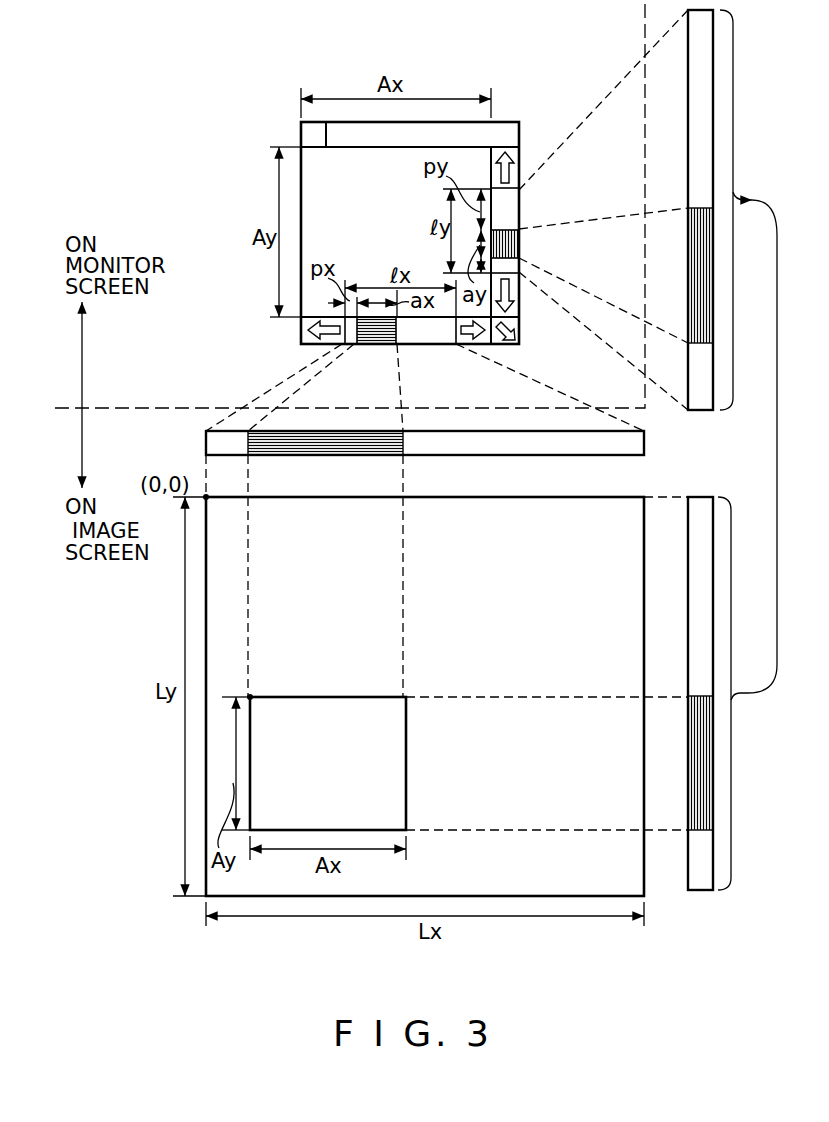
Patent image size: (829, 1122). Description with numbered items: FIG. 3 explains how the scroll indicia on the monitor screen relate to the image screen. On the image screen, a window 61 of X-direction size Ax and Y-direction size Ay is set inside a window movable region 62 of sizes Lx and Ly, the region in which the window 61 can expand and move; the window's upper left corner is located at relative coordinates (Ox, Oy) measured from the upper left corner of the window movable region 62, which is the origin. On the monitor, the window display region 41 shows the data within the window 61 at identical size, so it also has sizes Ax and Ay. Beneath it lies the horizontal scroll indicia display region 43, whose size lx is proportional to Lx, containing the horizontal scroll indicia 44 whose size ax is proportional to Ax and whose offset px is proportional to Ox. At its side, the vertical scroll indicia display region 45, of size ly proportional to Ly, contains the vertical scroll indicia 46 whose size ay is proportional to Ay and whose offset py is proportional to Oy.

The window display region 41 is at (484, 162).
The horizontal scroll indicia display region 43 is at (428, 346).
The horizontal scroll indicia 44 is at (372, 346).
The vertical scroll indicia display region 45 is at (522, 215).
The vertical scroll indicia 46 is at (521, 247).
The window 61 is at (408, 742).
The window movable region 62 is at (552, 497).